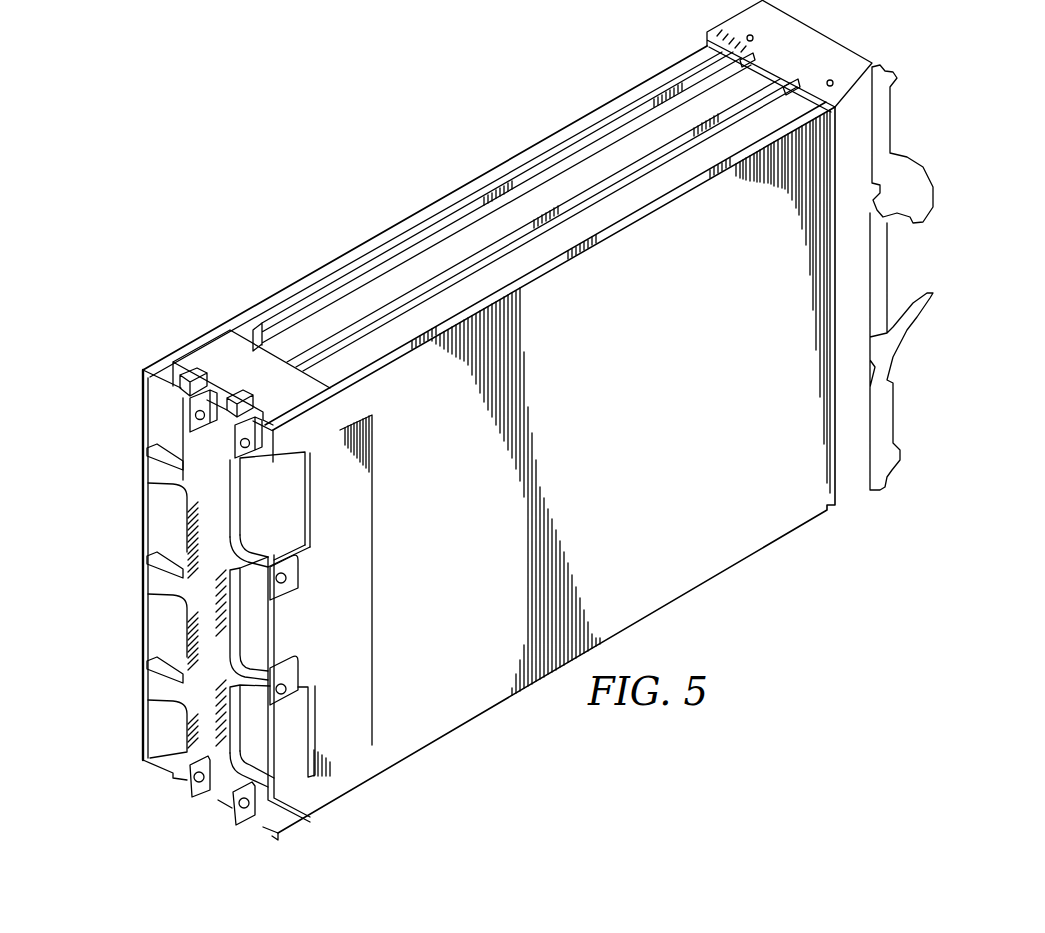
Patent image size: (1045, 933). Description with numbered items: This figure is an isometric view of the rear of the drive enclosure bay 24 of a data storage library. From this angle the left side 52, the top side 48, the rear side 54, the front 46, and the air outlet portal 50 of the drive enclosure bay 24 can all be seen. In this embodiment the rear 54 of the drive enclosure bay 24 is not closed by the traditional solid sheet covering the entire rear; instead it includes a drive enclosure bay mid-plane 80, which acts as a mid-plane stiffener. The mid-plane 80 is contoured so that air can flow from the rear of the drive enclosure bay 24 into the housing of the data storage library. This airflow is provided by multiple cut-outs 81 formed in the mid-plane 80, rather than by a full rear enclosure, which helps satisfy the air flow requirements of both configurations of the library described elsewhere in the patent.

The drive enclosure bay 24 is at (340, 215).
The front 46 is at (846, 486).
The top side 48 is at (567, 140).
The air outlet portal 50 is at (228, 362).
The left side 52 is at (736, 549).
The rear side 54 is at (195, 446).
The drive enclosure bay mid-plane 80 is at (185, 486).
The cut-outs 81 is at (163, 620).